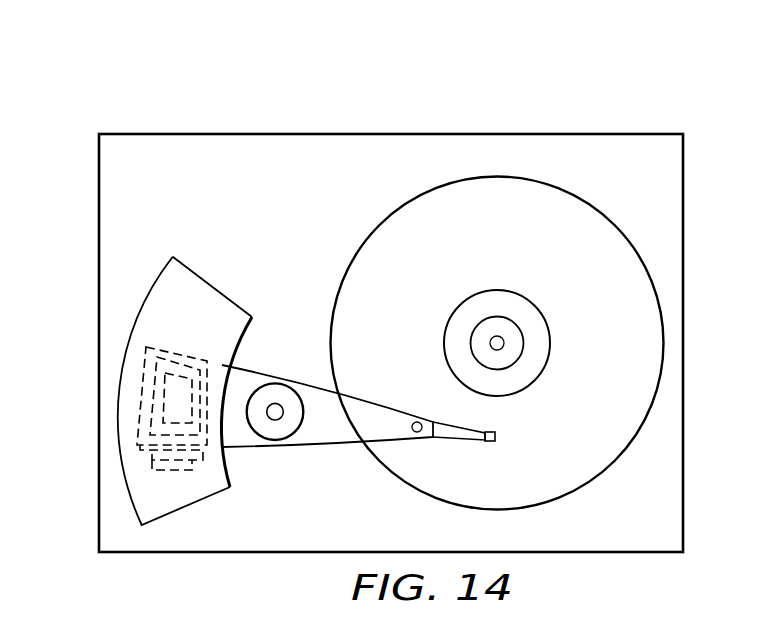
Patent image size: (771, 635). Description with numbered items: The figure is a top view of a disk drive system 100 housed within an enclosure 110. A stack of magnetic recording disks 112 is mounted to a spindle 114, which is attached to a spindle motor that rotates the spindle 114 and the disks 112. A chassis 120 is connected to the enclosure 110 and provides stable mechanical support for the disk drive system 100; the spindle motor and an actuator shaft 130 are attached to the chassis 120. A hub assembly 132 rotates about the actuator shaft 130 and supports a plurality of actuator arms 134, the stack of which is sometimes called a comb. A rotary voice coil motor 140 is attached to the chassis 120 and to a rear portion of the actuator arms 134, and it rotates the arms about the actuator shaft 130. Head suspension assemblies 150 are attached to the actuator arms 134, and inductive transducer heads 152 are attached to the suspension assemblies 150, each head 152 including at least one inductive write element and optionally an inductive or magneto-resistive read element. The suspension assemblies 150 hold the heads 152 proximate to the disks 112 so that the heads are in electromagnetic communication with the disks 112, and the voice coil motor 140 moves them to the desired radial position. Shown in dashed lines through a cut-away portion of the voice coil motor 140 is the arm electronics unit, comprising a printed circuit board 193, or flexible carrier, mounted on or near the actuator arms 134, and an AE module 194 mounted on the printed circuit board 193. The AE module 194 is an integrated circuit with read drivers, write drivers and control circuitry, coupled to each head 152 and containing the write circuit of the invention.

The disk drive system 100 is at (483, 106).
The enclosure 110 is at (99, 342).
The magnetic recording disks 112 is at (479, 246).
The spindle 114 is at (523, 343).
The chassis 120 is at (601, 527).
The actuator shaft 130 is at (283, 412).
The hub assembly 132 is at (273, 388).
The actuator arms 134 is at (378, 410).
The rotary voice coil motor 140 is at (205, 295).
The head suspension assemblies 150 is at (465, 436).
The inductive transducer heads 152 is at (496, 438).
The printed circuit board 193 is at (205, 452).
The AE module 194 is at (183, 472).